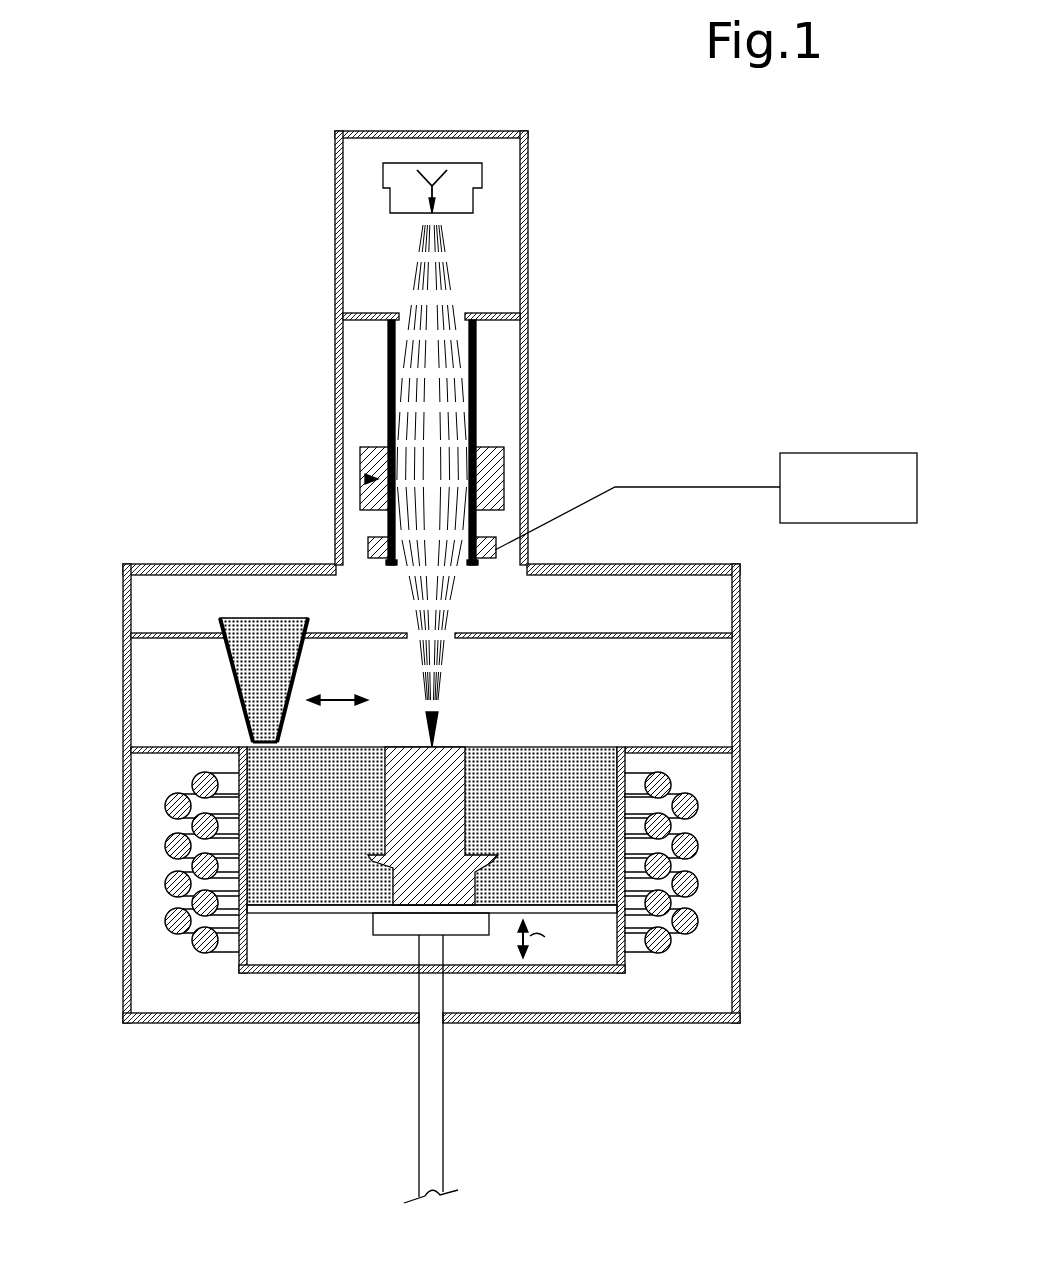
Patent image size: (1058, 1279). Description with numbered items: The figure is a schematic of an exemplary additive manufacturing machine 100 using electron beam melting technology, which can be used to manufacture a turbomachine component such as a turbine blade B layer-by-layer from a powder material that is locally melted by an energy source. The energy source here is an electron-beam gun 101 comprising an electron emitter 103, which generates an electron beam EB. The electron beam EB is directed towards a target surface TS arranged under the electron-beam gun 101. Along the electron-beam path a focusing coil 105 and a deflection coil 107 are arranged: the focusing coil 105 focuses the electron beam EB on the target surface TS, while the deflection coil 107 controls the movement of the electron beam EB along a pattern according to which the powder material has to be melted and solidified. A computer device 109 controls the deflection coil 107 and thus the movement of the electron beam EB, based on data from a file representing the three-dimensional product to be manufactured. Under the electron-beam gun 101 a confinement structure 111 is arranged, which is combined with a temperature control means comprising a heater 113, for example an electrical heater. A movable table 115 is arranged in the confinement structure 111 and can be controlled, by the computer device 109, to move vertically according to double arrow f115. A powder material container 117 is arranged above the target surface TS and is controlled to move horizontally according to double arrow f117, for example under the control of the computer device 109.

The additive manufacturing machine 100 is at (186, 482).
The electron-beam gun 101 is at (505, 208).
The electron emitter 103 is at (458, 203).
The focusing coil 105 is at (497, 478).
The deflection coil 107 is at (368, 547).
The computer device 109 is at (846, 460).
The confinement structure 111 is at (123, 706).
The heater 113 is at (176, 882).
The movable table 115 is at (328, 910).
The powder material container 117 is at (245, 682).
The electron beam EB is at (430, 275).
The turbine blade B is at (448, 747).
The target surface TS is at (592, 747).
The double arrow indicating horizontal movement of the powder material container f117 is at (337, 688).
The double arrow indicating vertical movement of the movable table f115 is at (548, 939).